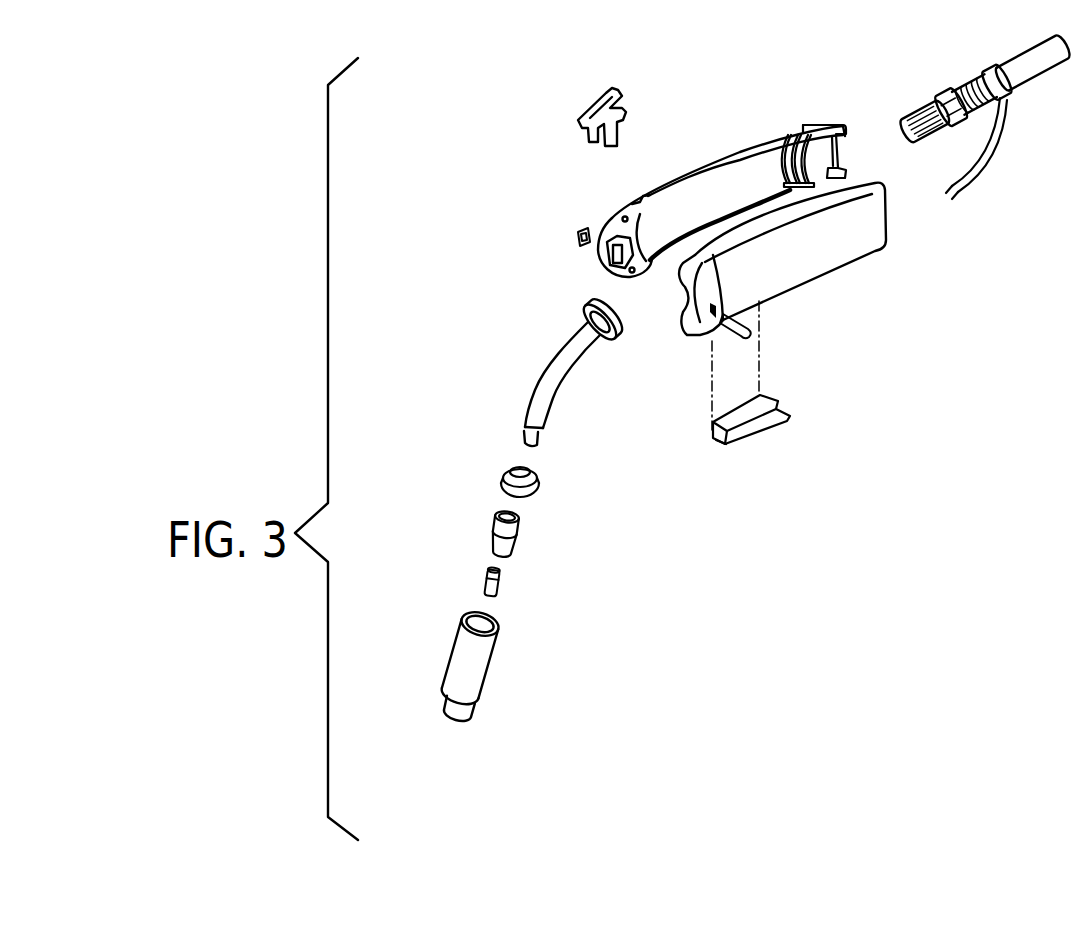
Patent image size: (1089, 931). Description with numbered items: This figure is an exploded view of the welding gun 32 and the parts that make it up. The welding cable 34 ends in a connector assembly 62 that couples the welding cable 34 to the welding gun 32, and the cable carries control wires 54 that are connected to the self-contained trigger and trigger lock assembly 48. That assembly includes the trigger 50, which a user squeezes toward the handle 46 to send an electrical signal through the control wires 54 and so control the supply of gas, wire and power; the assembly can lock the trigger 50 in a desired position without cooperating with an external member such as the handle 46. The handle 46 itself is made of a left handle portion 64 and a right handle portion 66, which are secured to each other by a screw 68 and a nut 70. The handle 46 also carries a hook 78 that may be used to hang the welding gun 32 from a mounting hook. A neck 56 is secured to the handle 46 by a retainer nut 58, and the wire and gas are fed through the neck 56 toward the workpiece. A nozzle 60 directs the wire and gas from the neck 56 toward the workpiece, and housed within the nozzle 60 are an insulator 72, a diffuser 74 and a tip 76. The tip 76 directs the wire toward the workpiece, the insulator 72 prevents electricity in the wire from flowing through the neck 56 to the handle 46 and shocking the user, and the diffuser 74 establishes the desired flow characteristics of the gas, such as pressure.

The welding gun 32 is at (804, 80).
The welding cable 34 is at (1008, 50).
The handle 46 is at (832, 118).
The self-contained trigger and trigger lock assembly 48 is at (736, 452).
The trigger 50 is at (783, 418).
The control wires 54 is at (968, 178).
The neck 56 is at (533, 400).
The retainer nut 58 is at (590, 302).
The nozzle 60 is at (448, 667).
The connector assembly 62 is at (910, 108).
The left handle portion 64 is at (823, 244).
The right handle portion 66 is at (726, 138).
The screw 68 is at (752, 325).
The nut 70 is at (575, 237).
The insulator 72 is at (542, 484).
The diffuser 74 is at (490, 548).
The tip 76 is at (500, 590).
The hook 78 is at (609, 88).